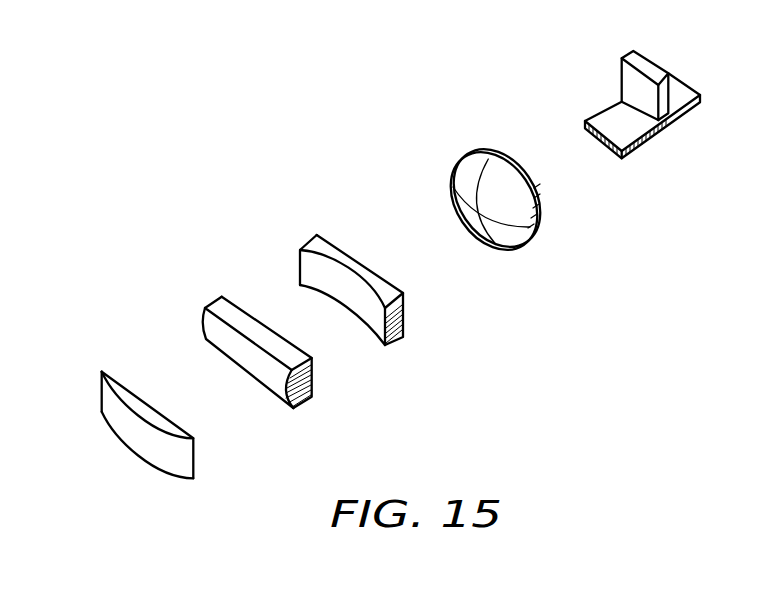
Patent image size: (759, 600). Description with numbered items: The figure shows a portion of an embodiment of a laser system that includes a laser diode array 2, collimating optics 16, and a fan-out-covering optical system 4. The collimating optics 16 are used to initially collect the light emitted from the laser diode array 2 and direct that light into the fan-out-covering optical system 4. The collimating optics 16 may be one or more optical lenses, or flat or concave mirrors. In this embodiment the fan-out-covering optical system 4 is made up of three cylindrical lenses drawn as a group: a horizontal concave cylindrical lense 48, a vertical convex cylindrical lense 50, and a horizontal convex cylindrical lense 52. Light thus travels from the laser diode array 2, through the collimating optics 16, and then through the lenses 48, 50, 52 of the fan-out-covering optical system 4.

The laser diode array 2 is at (672, 117).
The fan-out-covering optical system 4 is at (302, 238).
The collimating optics 16 is at (552, 245).
The horizontal concave cylindrical lense 48 is at (410, 346).
The vertical convex cylindrical lense 50 is at (320, 412).
The horizontal convex cylindrical lense 52 is at (211, 469).